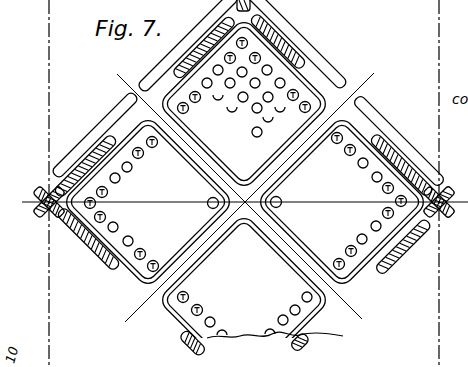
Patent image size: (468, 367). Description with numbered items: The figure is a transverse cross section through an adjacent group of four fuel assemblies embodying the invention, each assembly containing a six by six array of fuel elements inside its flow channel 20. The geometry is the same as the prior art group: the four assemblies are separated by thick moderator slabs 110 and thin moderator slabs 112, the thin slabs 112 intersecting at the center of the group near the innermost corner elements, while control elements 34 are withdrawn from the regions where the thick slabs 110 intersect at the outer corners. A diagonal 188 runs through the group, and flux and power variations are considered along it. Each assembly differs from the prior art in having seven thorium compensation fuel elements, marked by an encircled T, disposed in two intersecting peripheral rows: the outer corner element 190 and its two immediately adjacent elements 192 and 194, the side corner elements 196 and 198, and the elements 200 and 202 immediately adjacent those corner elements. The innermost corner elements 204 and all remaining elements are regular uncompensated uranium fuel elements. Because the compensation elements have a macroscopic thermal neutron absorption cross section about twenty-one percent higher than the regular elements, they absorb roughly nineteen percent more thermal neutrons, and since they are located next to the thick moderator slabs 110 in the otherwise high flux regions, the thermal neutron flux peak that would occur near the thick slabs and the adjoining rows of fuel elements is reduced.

The flow channel 20 is at (314, 89).
The control element 34 is at (261, 27).
The thick moderator slab 110 is at (132, 122).
The thin moderator slab 112 is at (160, 284).
The diagonal 188 is at (287, 225).
The outer corner element 190 is at (97, 205).
The adjacent element 192 is at (107, 217).
The adjacent element 194 is at (108, 193).
The corner element 196 is at (153, 148).
The corner element 198 is at (157, 262).
The element adjacent corner element 200 is at (142, 158).
The element adjacent corner element 202 is at (143, 250).
The innermost corner element 204 is at (208, 200).